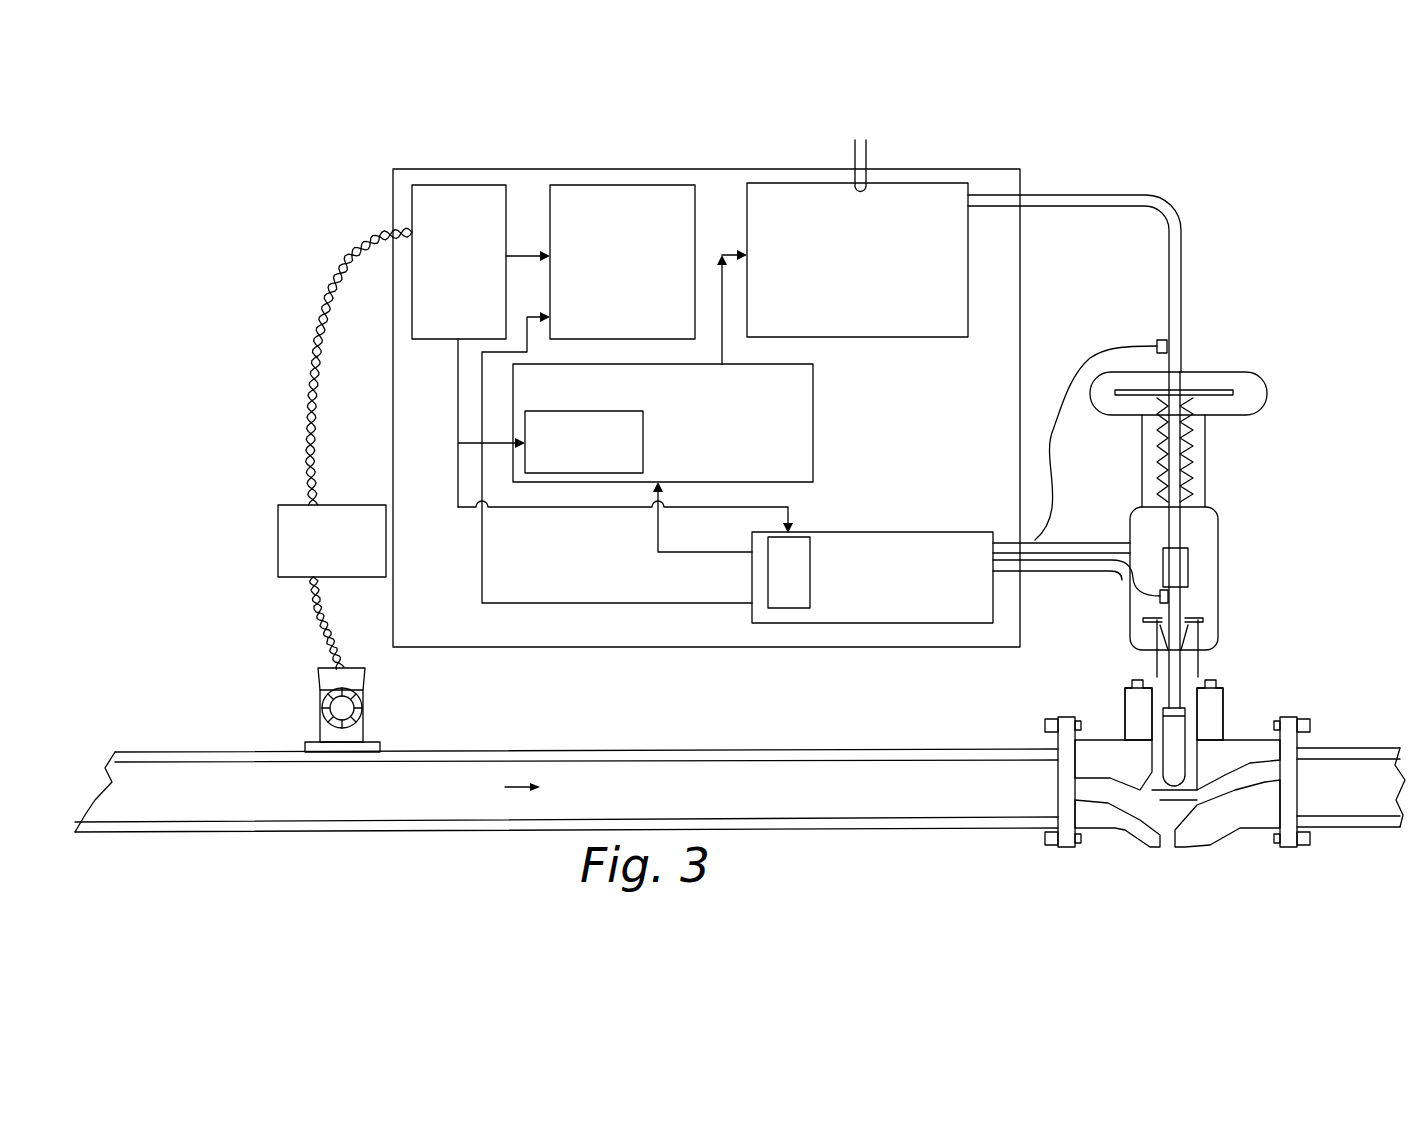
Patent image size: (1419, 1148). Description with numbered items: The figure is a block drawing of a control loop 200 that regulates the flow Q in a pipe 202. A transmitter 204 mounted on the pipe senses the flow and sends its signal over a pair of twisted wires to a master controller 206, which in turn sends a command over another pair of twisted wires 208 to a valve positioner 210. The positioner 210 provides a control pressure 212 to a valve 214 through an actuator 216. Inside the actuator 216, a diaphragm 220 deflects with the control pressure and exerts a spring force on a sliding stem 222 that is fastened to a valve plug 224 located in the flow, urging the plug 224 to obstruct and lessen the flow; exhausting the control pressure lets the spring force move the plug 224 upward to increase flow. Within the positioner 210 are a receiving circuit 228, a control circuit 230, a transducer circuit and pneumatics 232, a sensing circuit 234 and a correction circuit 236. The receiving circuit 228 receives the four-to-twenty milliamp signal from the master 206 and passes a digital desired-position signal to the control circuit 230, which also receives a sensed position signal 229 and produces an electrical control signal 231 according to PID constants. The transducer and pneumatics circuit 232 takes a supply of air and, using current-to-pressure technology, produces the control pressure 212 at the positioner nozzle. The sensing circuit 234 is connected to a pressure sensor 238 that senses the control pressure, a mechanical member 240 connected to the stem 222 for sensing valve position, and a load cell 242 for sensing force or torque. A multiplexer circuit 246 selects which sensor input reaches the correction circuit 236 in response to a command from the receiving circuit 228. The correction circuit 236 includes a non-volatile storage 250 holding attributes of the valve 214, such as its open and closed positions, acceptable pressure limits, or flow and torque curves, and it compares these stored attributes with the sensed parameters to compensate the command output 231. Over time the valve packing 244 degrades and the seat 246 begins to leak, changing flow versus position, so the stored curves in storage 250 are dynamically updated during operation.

The control loop 200 is at (565, 140).
The pipe 202 is at (592, 752).
The transmitter 204 is at (363, 677).
The master controller 206 is at (353, 577).
The pair of twisted wires 208 is at (322, 376).
The valve positioner 210 is at (450, 599).
The control pressure 212 is at (1043, 193).
The valve 214 is at (1223, 713).
The actuator 216 is at (1219, 548).
The diaphragm 220 is at (1203, 392).
The sliding stem 222 is at (1182, 530).
The valve plug 224 is at (1205, 684).
The receiving circuit 228 is at (437, 334).
The sensed position signal 229 is at (482, 552).
The control circuit 230 is at (600, 334).
The electrical control signal 231 is at (712, 253).
The transducer circuit and pneumatics 232 is at (830, 330).
The sensing circuit 234 is at (906, 617).
The correction circuit 236 is at (714, 435).
The pressure sensor 238 is at (1162, 340).
The mechanical member 240 is at (1052, 546).
The load cell 242 is at (1160, 597).
The valve packing 244 is at (1190, 625).
The multiplexer circuit 246 is at (810, 572).
The non-volatile storage 250 is at (606, 468).